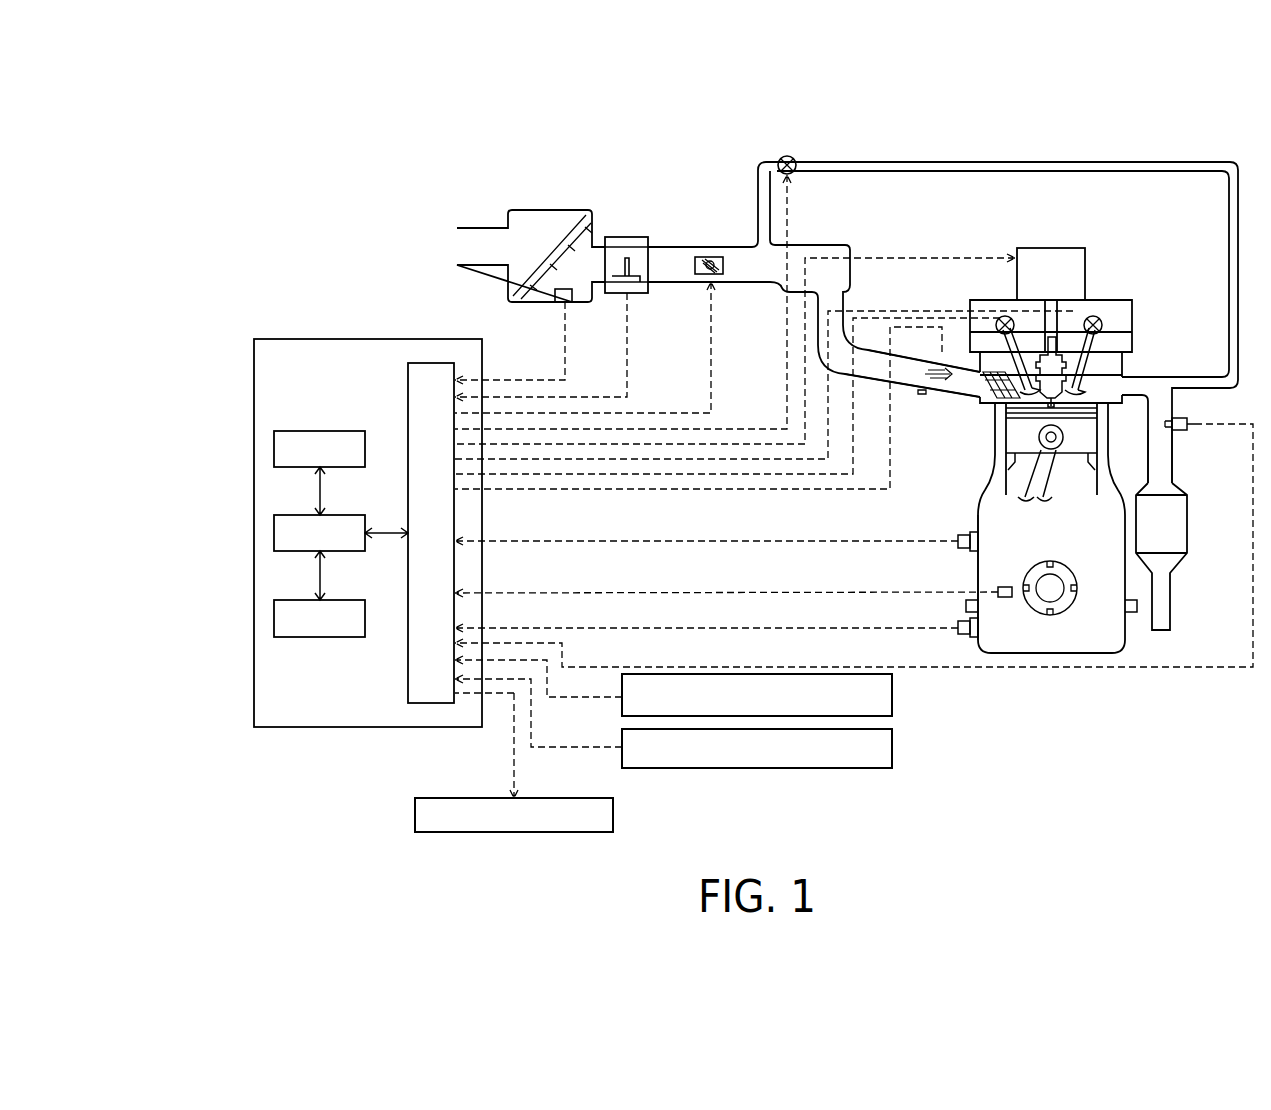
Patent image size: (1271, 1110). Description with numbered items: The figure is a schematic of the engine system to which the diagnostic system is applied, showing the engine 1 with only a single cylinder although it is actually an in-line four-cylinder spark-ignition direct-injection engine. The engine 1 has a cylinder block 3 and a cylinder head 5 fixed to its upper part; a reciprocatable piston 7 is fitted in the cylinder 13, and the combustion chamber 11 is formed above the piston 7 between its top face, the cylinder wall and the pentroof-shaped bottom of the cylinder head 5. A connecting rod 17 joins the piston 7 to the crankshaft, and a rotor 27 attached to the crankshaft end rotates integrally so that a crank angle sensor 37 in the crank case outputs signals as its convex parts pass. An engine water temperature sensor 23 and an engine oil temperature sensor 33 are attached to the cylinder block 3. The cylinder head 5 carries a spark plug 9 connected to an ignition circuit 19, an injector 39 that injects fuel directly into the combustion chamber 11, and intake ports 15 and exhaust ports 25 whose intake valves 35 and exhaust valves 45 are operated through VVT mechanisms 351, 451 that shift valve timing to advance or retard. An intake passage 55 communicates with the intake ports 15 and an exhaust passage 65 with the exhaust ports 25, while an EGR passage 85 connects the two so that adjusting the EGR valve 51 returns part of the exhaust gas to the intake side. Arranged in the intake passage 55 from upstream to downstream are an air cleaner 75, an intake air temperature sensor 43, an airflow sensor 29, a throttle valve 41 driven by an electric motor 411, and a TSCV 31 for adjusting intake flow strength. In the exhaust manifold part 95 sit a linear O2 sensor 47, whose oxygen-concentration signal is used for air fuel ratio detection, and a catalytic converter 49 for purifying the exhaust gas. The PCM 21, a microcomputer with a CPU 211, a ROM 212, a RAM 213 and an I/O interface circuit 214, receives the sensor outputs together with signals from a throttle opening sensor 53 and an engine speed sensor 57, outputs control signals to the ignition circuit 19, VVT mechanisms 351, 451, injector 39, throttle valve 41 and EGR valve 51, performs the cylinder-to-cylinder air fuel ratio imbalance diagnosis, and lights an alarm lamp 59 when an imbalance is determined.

The engine 1 is at (966, 496).
The cylinder block 3 is at (980, 525).
The cylinder head 5 is at (1124, 366).
The piston 7 is at (1086, 440).
The spark plug 9 is at (1062, 318).
The combustion chamber 11 is at (1037, 437).
The cylinder 13 is at (1010, 478).
The intake port 15 is at (986, 384).
The connecting rod 17 is at (1045, 485).
The ignition circuit 19 is at (1086, 249).
The PCM 21 is at (340, 339).
The engine water temperature sensor 23 is at (968, 552).
The exhaust port 25 is at (1118, 398).
The rotor 27 is at (1078, 588).
The airflow sensor 29 is at (637, 294).
The TSCV 31 is at (936, 371).
The engine oil temperature sensor 33 is at (968, 638).
The intake valve 35 is at (1000, 345).
The crank angle sensor 37 is at (1005, 598).
The injector 39 is at (1000, 402).
The throttle valve 41 is at (718, 257).
The intake air temperature sensor 43 is at (563, 303).
The exhaust valve 45 is at (1068, 348).
The linear O2 sensor 47 is at (1186, 419).
The catalytic converter 49 is at (1188, 524).
The EGR valve 51 is at (797, 158).
The throttle opening sensor 53 is at (893, 696).
The intake passage 55 is at (924, 394).
The engine speed sensor 57 is at (893, 748).
The alarm lamp 59 is at (615, 815).
The exhaust passage 65 is at (1156, 379).
The air cleaner 75 is at (549, 210).
The EGR passage 85 is at (1062, 162).
The exhaust manifold part 95 is at (1173, 446).
The CPU 211 is at (274, 533).
The ROM 212 is at (274, 447).
The RAM 213 is at (274, 617).
The I/O interface circuit 214 is at (433, 703).
The VVT mechanism 351 is at (1005, 318).
The electric motor 411 is at (708, 260).
The VVT mechanism 451 is at (1102, 321).